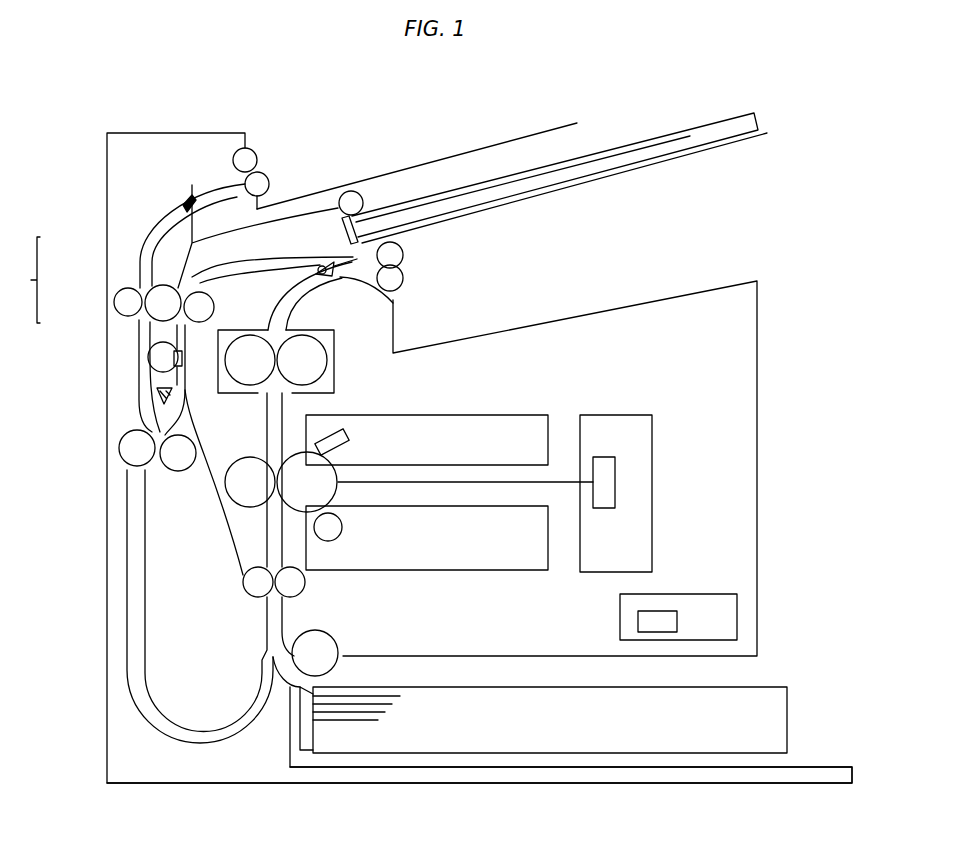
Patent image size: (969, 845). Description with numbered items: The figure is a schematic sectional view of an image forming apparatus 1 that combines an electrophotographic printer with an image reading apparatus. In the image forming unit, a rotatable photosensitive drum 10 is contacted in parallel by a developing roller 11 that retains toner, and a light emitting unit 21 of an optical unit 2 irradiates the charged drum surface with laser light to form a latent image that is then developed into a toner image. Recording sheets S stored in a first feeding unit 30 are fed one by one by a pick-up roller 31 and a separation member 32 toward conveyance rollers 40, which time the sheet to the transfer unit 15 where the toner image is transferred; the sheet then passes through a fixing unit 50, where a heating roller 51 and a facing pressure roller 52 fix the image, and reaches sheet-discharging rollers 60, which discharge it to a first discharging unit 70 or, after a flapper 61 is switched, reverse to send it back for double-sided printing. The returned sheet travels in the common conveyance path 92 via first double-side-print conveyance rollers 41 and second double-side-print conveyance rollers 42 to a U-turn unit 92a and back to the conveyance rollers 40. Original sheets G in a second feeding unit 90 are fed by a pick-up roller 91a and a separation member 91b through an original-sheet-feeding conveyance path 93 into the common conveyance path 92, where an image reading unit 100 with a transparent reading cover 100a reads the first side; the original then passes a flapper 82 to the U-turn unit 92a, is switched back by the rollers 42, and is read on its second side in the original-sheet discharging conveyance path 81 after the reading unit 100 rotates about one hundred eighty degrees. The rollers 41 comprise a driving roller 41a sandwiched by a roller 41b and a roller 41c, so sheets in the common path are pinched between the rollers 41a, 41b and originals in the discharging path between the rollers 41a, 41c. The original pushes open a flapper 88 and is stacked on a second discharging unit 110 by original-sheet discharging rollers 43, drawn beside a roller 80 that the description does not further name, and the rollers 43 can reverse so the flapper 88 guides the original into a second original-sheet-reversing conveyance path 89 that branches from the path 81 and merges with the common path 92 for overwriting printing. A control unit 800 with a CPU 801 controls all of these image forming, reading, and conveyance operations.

The image forming apparatus 1 is at (758, 420).
The optical unit 2 is at (622, 415).
The photosensitive drum 10 is at (332, 458).
The developing roller 11 is at (343, 527).
The transfer unit 15 is at (250, 507).
The light emitting unit 21 is at (616, 480).
The first feeding unit 30 is at (812, 767).
The pick-up roller 31 is at (339, 645).
The separation member 32 is at (300, 739).
The conveyance rollers 40 is at (301, 585).
The first double-side-print conveyance rollers 41 is at (109, 279).
The driving roller 41a is at (150, 295).
The roller 41b is at (188, 297).
The roller 41c is at (115, 305).
The second double-side-print conveyance rollers 42 is at (127, 453).
The original-sheet discharging rollers 43 is at (247, 150).
The fixing unit 50 is at (336, 382).
The heating roller 51 is at (325, 358).
The pressure roller 52 is at (240, 374).
The sheet-discharging rollers 60 is at (403, 253).
The flapper 61 is at (348, 286).
The first discharging unit 70 is at (635, 304).
The reverse roller 80 is at (263, 257).
The original-sheet discharging conveyance path 81 is at (148, 233).
The flapper 82 is at (158, 398).
The flapper 88 is at (186, 198).
The second original-sheet-reversing conveyance path 89 is at (152, 215).
The second feeding unit 90 is at (633, 165).
The pick-up roller 91a is at (352, 191).
The separation member 91b is at (400, 230).
The common conveyance path 92 is at (203, 450).
The U-turn unit 92a is at (130, 633).
The original-sheet-feeding conveyance path 93 is at (307, 205).
The image reading unit 100 is at (150, 366).
The reading cover 100a is at (176, 358).
The second discharging unit 110 is at (428, 161).
The control unit 800 is at (718, 594).
The CPU 801 is at (678, 622).
The original sheet G is at (690, 128).
The recording sheet S is at (772, 690).